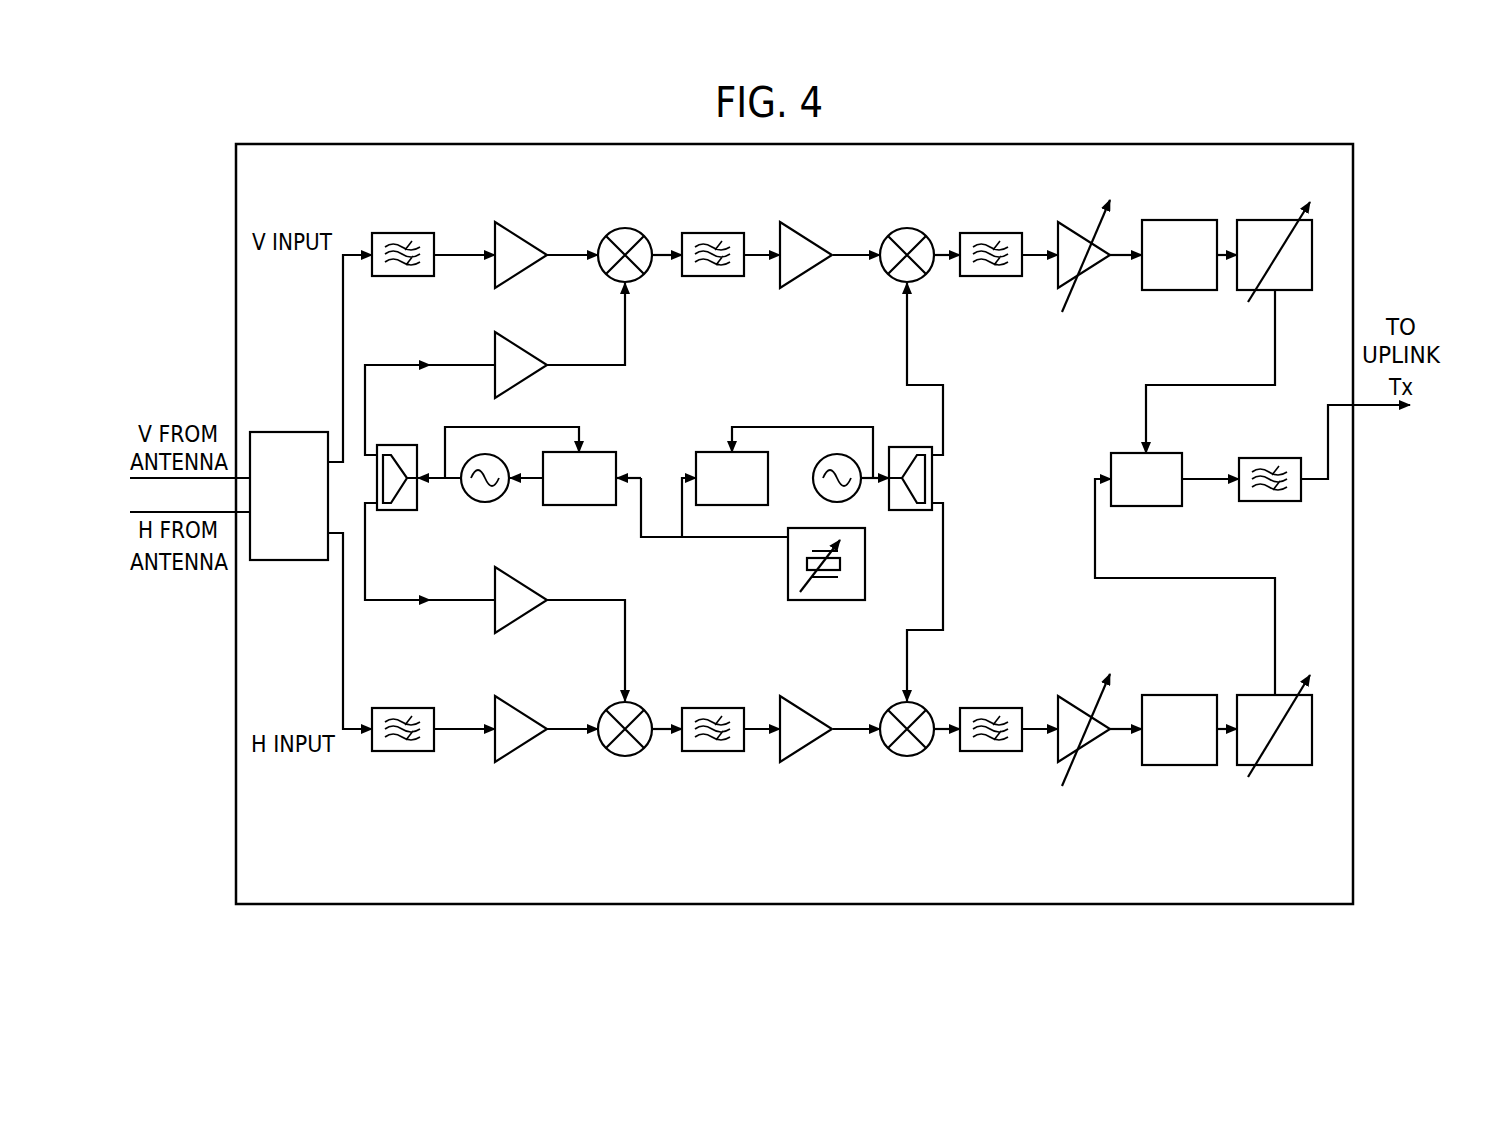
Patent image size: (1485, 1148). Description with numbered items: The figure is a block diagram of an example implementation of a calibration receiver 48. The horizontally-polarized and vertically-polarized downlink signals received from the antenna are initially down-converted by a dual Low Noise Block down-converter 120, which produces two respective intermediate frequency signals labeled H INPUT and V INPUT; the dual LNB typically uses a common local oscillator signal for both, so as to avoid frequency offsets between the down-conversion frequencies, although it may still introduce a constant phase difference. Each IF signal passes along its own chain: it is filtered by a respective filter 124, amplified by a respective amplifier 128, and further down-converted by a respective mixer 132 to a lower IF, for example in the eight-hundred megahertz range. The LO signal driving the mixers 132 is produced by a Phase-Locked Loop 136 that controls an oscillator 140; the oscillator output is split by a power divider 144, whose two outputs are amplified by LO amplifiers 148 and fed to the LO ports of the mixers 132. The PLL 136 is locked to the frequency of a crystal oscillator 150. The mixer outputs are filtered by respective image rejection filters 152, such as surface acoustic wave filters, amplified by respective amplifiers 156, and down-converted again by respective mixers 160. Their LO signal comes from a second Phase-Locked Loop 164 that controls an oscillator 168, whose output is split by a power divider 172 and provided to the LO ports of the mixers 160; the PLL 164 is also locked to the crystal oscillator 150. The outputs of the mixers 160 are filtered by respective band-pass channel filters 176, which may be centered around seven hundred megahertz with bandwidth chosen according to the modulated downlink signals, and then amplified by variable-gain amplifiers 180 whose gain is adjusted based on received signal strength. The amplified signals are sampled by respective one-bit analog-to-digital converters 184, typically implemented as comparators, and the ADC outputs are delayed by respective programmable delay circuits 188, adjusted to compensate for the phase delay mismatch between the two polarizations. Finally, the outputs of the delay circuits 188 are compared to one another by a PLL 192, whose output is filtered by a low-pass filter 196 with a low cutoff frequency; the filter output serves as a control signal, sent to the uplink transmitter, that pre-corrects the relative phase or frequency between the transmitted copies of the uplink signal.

The calibration receiver 48 is at (356, 144).
The dual Low Noise Block (LNB) down-converter 120 is at (270, 562).
The filter 124 is at (398, 233).
The amplifier 128 is at (524, 232).
The mixer 132 is at (612, 231).
The Phase-Locked Loop 136 is at (563, 505).
The oscillator 140 is at (496, 500).
The power divider 144 is at (400, 510).
The LO amplifier 148 is at (520, 344).
The crystal oscillator 150 is at (805, 600).
The image rejection filter 152 is at (710, 233).
The amplifier 156 is at (800, 230).
The mixer 160 is at (922, 231).
The Phase-Locked Loop 164 is at (708, 452).
The oscillator 168 is at (856, 497).
The power divider 172 is at (943, 478).
The band-pass channel filter 176 is at (978, 233).
The variable-gain amplifier 180 is at (1072, 225).
The 1-bit Analog-to-Digital Converter 184 is at (1168, 220).
The programmable delay circuit 188 is at (1250, 220).
The PLL 192 is at (1122, 453).
The low-pass filter 196 is at (1272, 501).